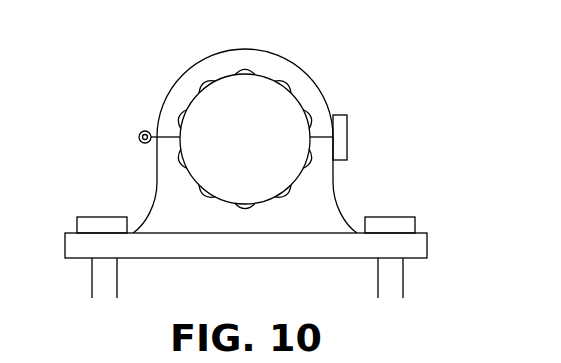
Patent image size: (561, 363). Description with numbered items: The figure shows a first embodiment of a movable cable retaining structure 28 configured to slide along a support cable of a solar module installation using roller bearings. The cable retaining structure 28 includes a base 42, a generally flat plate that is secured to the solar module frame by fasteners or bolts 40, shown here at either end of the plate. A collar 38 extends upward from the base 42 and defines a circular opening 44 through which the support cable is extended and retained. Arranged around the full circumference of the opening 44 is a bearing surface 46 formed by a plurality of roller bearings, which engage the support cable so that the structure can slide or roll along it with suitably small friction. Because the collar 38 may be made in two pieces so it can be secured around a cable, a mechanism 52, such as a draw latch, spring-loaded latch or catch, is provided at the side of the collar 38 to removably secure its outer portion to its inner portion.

The cable retaining structure 28 is at (264, 162).
The collar 38 is at (168, 93).
The opening 44 is at (257, 119).
The bearing surface 46 is at (285, 151).
The mechanism 52 is at (280, 137).
The fasteners or bolts 40 is at (78, 218).
The base 42 is at (428, 246).